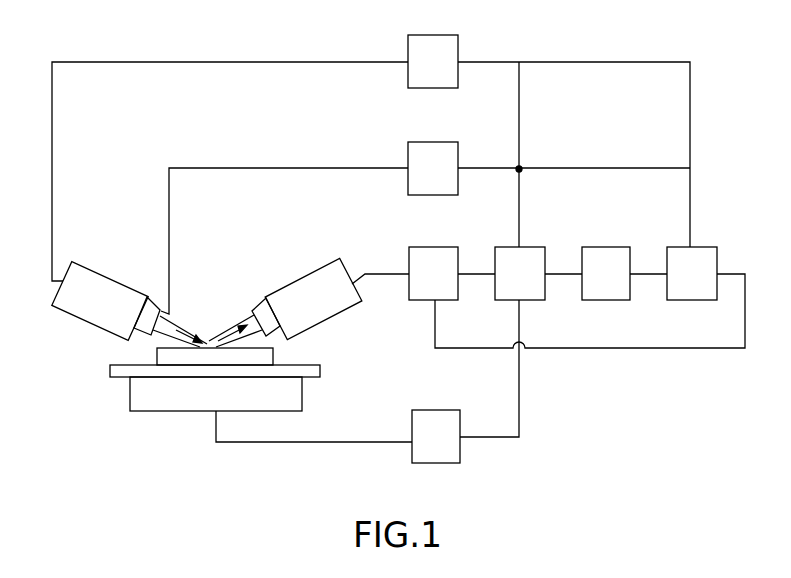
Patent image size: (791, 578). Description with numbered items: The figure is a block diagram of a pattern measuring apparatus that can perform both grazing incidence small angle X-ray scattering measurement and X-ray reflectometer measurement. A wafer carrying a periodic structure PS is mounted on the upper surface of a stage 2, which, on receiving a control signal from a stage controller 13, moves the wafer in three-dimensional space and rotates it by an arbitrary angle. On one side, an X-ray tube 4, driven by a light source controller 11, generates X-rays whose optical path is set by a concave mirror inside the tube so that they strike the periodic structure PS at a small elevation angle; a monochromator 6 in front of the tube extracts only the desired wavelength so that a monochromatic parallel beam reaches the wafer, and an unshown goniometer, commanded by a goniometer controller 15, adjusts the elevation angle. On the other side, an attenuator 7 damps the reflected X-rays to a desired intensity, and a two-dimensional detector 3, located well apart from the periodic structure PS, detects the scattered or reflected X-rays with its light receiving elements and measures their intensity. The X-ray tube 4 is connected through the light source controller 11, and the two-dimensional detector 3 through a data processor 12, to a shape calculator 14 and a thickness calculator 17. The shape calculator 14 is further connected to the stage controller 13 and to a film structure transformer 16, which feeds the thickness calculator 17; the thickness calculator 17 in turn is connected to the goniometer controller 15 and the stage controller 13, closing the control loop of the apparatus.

The stage 2 is at (130, 395).
The two-dimensional detector 3 is at (307, 285).
The X-ray tube 4 is at (101, 292).
The monochromator 6 is at (155, 312).
The attenuator 7 is at (267, 313).
The light source controller 11 is at (458, 51).
The data processor 12 is at (452, 246).
The stage controller 13 is at (445, 410).
The shape calculator 14 is at (532, 246).
The goniometer controller 15 is at (448, 141).
The film structure transformer 16 is at (610, 246).
The thickness calculator 17 is at (705, 246).
The periodic structure PS is at (267, 355).